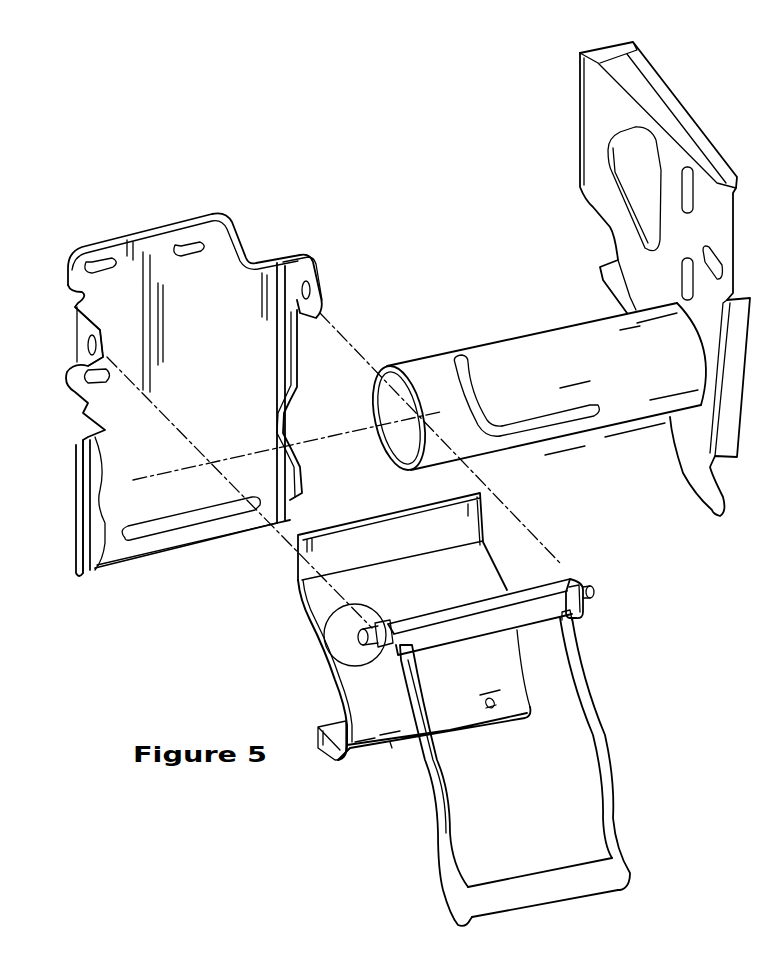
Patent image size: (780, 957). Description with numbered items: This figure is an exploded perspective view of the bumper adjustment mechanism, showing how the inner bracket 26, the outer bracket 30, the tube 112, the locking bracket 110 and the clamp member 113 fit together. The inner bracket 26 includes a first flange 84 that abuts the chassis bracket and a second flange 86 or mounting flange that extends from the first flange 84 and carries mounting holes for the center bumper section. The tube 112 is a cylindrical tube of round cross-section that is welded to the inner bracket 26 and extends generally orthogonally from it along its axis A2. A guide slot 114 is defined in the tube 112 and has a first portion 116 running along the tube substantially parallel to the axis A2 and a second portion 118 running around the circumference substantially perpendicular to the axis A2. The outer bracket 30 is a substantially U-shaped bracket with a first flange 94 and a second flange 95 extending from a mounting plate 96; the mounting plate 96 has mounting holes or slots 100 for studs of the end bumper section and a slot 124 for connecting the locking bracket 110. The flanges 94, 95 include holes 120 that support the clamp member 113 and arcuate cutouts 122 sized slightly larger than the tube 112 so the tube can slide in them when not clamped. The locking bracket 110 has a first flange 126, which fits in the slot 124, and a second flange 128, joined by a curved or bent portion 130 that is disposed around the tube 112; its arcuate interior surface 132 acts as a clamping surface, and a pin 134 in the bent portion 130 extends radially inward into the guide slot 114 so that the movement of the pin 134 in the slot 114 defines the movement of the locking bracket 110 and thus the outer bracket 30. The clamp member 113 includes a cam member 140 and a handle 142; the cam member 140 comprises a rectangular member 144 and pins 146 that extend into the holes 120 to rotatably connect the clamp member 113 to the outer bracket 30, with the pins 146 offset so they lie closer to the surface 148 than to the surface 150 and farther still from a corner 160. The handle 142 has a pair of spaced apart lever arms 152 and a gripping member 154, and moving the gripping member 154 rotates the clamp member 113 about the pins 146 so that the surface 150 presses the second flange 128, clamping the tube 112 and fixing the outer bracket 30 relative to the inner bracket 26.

The inner bracket 26 is at (615, 108).
The outer bracket 30 is at (148, 236).
The first flange 84 is at (705, 195).
The second flange 86 is at (633, 52).
The first flange 94 is at (78, 328).
The second flange 95 is at (297, 268).
The mounting plate 96 is at (120, 508).
The mounting holes or slots 100 is at (93, 262).
The locking bracket 110 is at (395, 732).
The tube 112 is at (420, 378).
The clamp member 113 is at (573, 613).
The guide slot 114 is at (540, 422).
The first portion 116 is at (570, 415).
The second portion 118 is at (478, 386).
The holes 120 is at (92, 341).
The arcuate cutouts 122 is at (88, 493).
The slot 124 is at (180, 520).
The first flange 126 is at (330, 745).
The second flange 128 is at (327, 552).
The curved or bent portion 130 is at (363, 684).
The arcuate interior surface 132 is at (365, 708).
The pin 134 is at (483, 687).
The cam member 140 is at (540, 607).
The handle 142 is at (440, 835).
The rectangular member 144 is at (372, 663).
The pin 146 is at (590, 590).
The surface 148 is at (510, 593).
The surface 150 is at (462, 607).
The lever arms 152 is at (433, 795).
The gripping member 154 is at (535, 887).
The corner 160 is at (330, 608).
The axis A2 is at (333, 470).